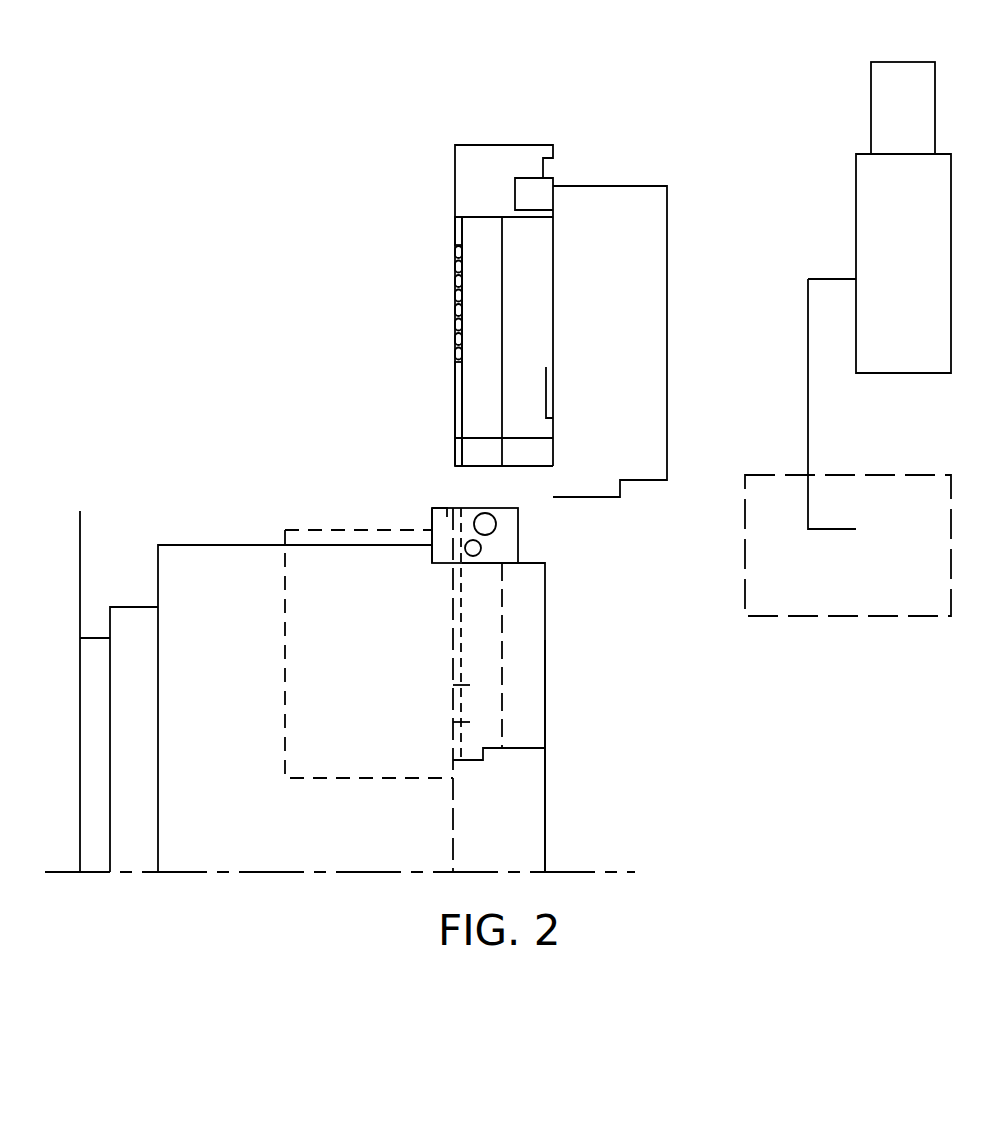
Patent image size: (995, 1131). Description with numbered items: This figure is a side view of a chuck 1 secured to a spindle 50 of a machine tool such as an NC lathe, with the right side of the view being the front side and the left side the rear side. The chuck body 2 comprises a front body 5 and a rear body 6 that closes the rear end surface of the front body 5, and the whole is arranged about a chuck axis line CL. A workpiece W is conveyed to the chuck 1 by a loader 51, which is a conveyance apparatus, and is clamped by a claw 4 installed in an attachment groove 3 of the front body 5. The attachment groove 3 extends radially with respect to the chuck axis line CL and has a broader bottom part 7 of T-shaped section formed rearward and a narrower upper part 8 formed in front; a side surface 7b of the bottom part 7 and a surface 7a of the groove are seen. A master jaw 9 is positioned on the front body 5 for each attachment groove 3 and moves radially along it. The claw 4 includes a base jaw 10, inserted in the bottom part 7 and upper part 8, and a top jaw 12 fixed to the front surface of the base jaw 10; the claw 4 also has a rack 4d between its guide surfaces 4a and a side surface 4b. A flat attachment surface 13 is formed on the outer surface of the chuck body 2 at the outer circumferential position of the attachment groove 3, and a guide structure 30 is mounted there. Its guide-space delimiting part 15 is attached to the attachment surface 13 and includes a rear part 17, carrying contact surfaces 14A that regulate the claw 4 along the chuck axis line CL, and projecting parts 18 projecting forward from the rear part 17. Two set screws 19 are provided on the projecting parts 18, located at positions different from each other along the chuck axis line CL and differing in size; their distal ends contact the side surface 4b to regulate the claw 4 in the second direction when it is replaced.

The chuck 1 is at (270, 295).
The chuck body 2 is at (295, 675).
The attachment groove 3 is at (502, 674).
The claw 4 is at (545, 309).
The guide surface 4a is at (458, 372).
The side surface 4b is at (495, 328).
The rack 4d is at (458, 292).
The front body 5 is at (257, 545).
The rear body 6 is at (128, 607).
The bottom part 7 is at (478, 762).
The upper guide surface 7a is at (462, 685).
The side surface 7b is at (462, 722).
The upper part 8 is at (545, 718).
The master jaw 9 is at (315, 530).
The base jaw 10 is at (458, 235).
The top jaw 12 is at (667, 272).
The attachment surface 13 is at (545, 565).
The contact surface 14A is at (466, 525).
The guide-space delimiting part 15 is at (432, 502).
The rear part 17 is at (432, 516).
The projecting part 18 is at (518, 540).
The set screw 19 is at (432, 588).
The guide structure 30 is at (480, 518).
The spindle 50 is at (82, 530).
The loader 51 is at (902, 62).
The workpiece W is at (822, 617).
The chuck axis line CL is at (603, 872).